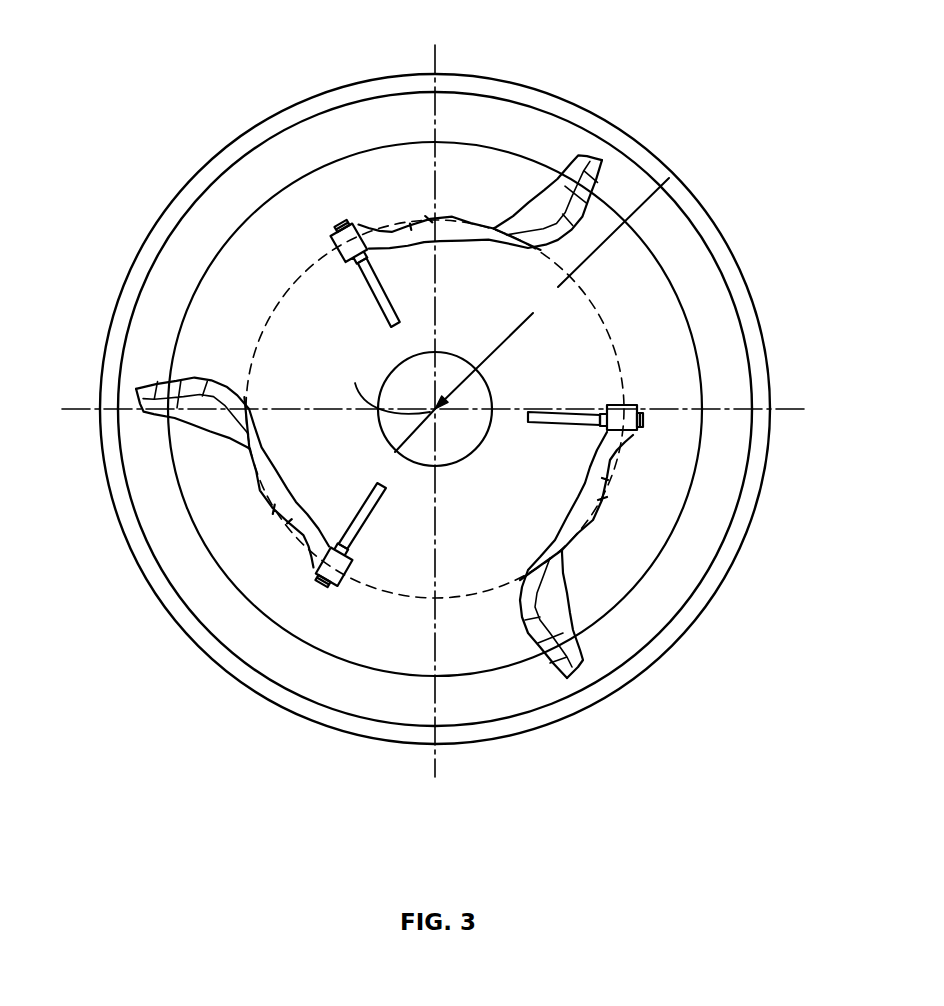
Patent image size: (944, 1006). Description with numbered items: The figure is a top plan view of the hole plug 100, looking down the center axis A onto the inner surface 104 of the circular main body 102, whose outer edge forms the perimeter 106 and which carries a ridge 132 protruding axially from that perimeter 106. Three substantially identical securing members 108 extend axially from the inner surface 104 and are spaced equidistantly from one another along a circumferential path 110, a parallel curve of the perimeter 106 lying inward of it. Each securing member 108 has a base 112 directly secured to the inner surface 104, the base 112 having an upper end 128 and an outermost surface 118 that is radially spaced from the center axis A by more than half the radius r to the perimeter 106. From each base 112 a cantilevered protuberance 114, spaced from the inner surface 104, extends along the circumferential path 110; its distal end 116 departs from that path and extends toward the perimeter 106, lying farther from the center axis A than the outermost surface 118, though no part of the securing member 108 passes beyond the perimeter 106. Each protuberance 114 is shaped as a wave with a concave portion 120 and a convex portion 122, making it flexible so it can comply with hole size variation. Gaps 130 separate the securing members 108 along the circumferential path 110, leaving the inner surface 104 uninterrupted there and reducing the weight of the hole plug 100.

The hole plug 100 is at (130, 82).
The main body 102 is at (722, 542).
The inner surface 104 is at (627, 552).
The perimeter 106 is at (158, 224).
The securing member 108 is at (418, 282).
The circumferential path 110 is at (593, 295).
The base 112 is at (347, 222).
The cantilevered protuberance 114 is at (588, 216).
The distal end 116 is at (598, 150).
The outermost surface 118 is at (338, 224).
The concave portion 120 is at (543, 190).
The convex portion 122 is at (424, 212).
The upper end 128 is at (353, 267).
The gap 130 is at (283, 280).
The ridge 132 is at (757, 347).